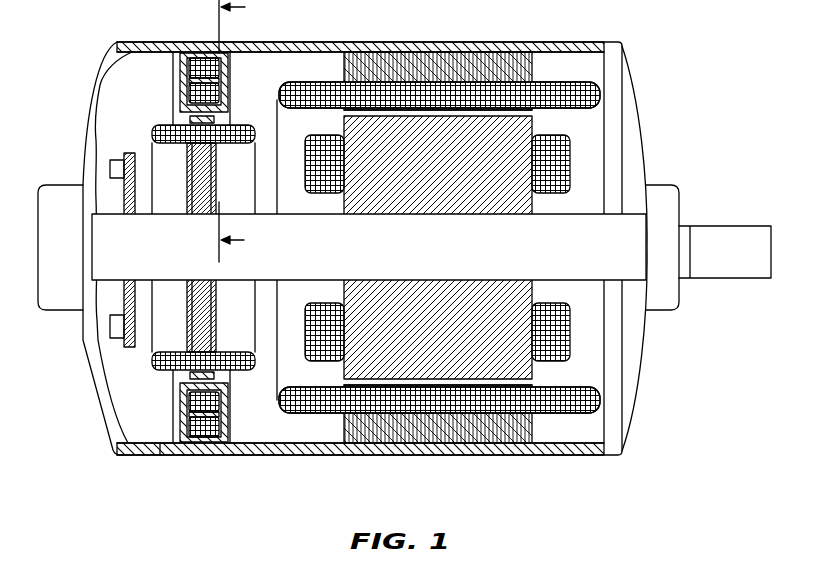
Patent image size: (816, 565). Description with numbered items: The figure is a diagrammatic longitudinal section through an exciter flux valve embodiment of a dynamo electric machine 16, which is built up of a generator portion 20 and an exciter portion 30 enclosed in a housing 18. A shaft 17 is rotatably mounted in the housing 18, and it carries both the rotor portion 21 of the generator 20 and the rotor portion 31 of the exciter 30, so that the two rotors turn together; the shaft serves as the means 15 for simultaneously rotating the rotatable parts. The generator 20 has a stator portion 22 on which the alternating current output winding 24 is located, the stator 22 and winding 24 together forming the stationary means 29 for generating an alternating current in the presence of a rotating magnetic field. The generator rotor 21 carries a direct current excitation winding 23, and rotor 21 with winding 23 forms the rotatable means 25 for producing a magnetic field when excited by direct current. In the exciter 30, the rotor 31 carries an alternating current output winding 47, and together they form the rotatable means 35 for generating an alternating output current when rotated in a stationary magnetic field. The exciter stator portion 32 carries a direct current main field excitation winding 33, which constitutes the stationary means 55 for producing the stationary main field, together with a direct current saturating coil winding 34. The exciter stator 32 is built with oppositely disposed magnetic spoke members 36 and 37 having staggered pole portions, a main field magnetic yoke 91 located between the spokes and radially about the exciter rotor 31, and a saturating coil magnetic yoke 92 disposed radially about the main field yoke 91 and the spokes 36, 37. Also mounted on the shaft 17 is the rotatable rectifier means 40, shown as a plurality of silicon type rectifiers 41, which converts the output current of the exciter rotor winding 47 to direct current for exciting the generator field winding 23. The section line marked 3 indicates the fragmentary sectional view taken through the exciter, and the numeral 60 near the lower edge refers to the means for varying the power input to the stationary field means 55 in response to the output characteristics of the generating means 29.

The section line 3- 3 is at (239, 131).
The rotating means 15 is at (721, 286).
The dynamo electric machine 16 is at (652, 80).
The shaft 17 is at (714, 227).
The housing 18 is at (647, 130).
The generator portion 20 is at (411, 448).
The rotor portion 21 is at (575, 376).
The stator portion 22 is at (474, 428).
The direct current excitation winding 23 is at (575, 332).
The alternating current output winding 24 is at (373, 410).
The rotatable field means 25 is at (548, 205).
The stationary generating means 29 is at (553, 431).
The exciter portion 30 is at (207, 460).
The rotor portion 31 is at (233, 420).
The stator portion 32 is at (148, 453).
The main field excitation winding 33 is at (224, 94).
The saturating coil winding 34 is at (242, 61).
The rotatable generating means 35 is at (160, 116).
The magnetic spoke member 36 is at (134, 427).
The magnetic spoke member 37 is at (251, 388).
The rotatable rectifier means 40 is at (113, 353).
The rectifiers 41 is at (110, 328).
The alternating current output winding 47 is at (244, 130).
The stationary field means 55 is at (170, 430).
The power varying means 60 is at (633, 563).
The main field magnetic yoke 91 is at (190, 450).
The saturating coil magnetic yoke 92 is at (226, 452).